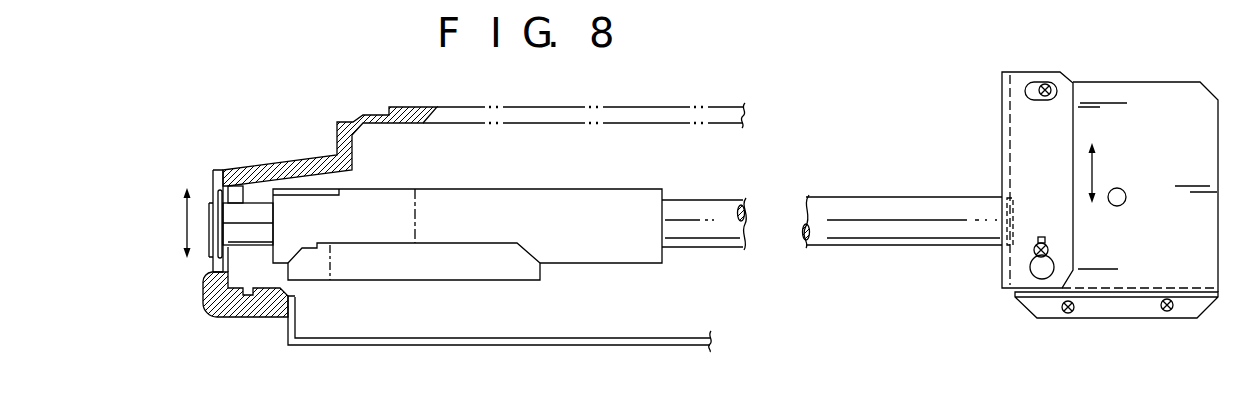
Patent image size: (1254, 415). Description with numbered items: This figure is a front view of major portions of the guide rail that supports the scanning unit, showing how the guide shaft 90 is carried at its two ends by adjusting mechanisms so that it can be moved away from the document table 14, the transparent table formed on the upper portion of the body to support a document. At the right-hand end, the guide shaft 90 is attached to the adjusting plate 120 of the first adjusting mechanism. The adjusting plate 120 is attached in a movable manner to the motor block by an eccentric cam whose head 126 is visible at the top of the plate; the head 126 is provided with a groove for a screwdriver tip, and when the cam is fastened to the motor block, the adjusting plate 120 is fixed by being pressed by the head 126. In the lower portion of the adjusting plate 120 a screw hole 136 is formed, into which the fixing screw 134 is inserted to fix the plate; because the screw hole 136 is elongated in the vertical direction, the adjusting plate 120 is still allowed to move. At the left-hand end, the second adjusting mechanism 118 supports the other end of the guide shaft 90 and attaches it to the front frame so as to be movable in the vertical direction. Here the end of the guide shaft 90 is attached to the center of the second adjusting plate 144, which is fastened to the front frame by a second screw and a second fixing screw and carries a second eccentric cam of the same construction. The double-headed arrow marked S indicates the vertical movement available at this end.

The document table 14 is at (607, 122).
The guide shaft 90 is at (720, 217).
The second adjusting mechanism 118 is at (213, 263).
The adjusting plate 120 is at (1018, 72).
The head 126 is at (1045, 85).
The fixing screw 134 is at (1033, 253).
The screw hole 136 is at (1055, 268).
The second adjusting plate 144 is at (219, 195).
The stroke distance S is at (184, 229).